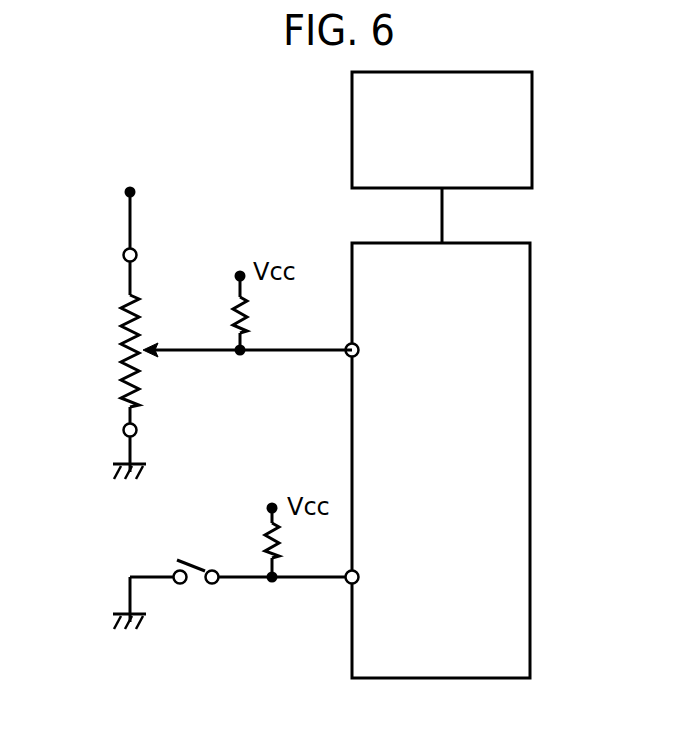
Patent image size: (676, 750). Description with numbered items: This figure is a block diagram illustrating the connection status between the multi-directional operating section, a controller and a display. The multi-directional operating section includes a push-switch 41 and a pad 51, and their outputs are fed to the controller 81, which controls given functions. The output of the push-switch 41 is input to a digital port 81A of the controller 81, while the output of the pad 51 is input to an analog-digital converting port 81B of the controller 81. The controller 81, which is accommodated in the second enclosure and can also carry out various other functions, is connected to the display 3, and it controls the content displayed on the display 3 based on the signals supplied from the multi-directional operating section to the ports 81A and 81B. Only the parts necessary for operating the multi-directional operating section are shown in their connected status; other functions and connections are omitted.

The display 3 is at (533, 118).
The controller 81 is at (533, 450).
The digital port 81A is at (346, 583).
The analog-digital converting port 81B is at (346, 357).
The pad 51 is at (108, 340).
The push-switch 41 is at (168, 562).